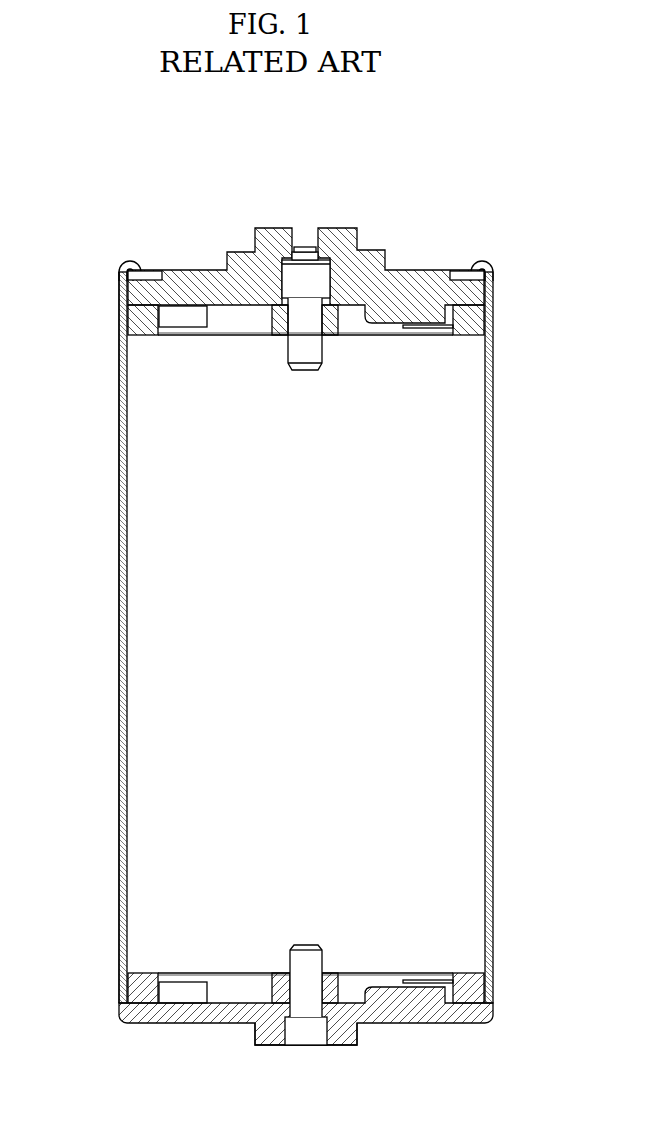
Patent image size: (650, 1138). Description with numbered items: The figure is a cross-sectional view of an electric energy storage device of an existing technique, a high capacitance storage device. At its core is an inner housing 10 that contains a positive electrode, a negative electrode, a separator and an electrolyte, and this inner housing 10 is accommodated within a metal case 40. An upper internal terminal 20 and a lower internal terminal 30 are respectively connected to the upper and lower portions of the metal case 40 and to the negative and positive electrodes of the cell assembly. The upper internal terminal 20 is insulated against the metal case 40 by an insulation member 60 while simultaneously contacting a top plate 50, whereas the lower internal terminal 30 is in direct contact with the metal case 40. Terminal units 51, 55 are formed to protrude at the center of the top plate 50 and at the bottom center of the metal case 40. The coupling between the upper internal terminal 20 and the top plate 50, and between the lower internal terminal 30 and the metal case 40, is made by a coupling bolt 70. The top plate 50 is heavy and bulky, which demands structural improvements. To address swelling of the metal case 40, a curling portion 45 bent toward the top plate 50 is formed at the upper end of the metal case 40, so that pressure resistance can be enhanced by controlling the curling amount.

The inner housing 10 is at (136, 497).
The upper internal terminal 20 is at (147, 317).
The lower internal terminal 30 is at (138, 988).
The metal case 40 is at (107, 549).
The curling portion 45 is at (122, 249).
The top plate 50 is at (184, 261).
The terminal unit 51 is at (253, 228).
The terminal unit 55 is at (255, 1046).
The insulation member 60 is at (122, 320).
The coupling bolt 70 is at (322, 957).